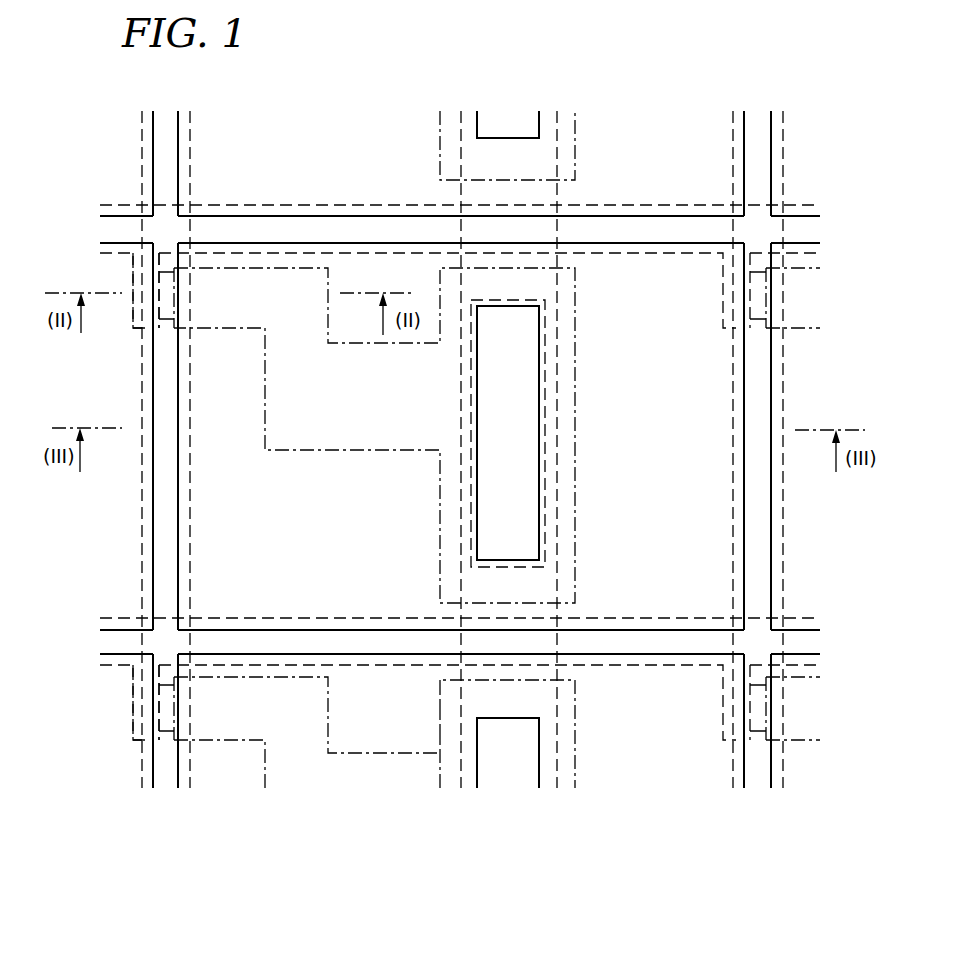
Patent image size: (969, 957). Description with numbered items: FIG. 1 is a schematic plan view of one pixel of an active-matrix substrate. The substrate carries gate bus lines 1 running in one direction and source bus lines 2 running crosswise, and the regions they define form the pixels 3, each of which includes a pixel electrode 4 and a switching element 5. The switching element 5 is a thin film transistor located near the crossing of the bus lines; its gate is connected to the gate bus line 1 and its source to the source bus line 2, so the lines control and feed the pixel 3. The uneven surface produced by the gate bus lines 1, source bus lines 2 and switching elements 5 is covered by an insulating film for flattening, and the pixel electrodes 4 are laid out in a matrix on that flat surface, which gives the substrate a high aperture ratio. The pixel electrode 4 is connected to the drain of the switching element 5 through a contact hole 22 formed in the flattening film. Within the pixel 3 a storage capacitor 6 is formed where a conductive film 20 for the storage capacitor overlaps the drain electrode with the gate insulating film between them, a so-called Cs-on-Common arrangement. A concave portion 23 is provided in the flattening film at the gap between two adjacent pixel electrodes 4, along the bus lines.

The gate bus line 1 is at (232, 205).
The source bus line 2 is at (192, 158).
The pixel 3 is at (106, 326).
The pixel electrode 4 is at (183, 390).
The switching element 5 is at (162, 327).
The storage capacitor 6 is at (586, 468).
The conductive film for the storage capacitor 20 is at (556, 350).
The contact hole 22 is at (470, 498).
The concave portion 23 is at (148, 503).